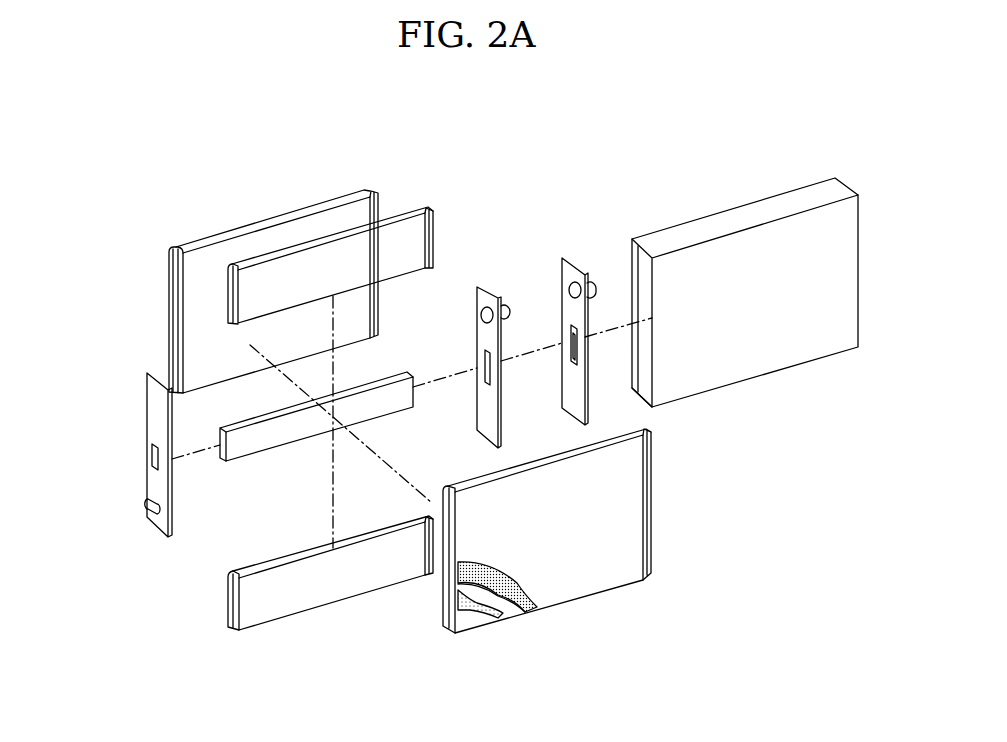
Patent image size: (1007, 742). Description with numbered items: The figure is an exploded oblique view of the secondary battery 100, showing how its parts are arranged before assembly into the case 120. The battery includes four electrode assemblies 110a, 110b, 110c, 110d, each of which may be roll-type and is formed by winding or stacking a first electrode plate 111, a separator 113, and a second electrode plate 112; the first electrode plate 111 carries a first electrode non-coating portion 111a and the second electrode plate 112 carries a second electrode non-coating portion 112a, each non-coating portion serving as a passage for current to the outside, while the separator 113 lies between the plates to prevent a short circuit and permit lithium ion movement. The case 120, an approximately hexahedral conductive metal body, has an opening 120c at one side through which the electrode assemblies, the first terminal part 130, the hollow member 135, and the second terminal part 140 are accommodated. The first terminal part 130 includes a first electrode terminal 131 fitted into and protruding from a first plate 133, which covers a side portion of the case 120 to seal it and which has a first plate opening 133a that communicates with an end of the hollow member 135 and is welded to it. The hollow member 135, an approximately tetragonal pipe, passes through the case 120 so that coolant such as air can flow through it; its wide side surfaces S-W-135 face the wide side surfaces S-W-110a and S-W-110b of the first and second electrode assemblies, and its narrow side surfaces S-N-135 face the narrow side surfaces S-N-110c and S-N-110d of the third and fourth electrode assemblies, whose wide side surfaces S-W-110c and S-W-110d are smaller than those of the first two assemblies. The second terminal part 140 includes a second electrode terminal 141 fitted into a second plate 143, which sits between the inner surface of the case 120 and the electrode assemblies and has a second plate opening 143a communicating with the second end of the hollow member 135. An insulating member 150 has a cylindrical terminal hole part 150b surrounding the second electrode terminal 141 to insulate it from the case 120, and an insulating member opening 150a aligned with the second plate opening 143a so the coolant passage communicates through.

The secondary battery 100 is at (105, 128).
The first electrode assembly 110a is at (608, 577).
The second electrode assembly 110b is at (350, 196).
The third electrode assembly 110c is at (383, 268).
The fourth electrode assembly 110d is at (300, 610).
The first electrode plate 111 is at (502, 614).
The first electrode non-coating portion 111a is at (228, 287).
The second electrode plate 112 is at (535, 612).
The second electrode non-coating portion 112a is at (376, 205).
The separator 113 is at (520, 612).
The case 120 is at (729, 297).
The opening 120c is at (632, 273).
The first terminal part 130 is at (112, 459).
The first electrode terminal 131 is at (133, 487).
The first plate 133 is at (148, 420).
The first plate opening 133a is at (155, 457).
The hollow member 135 is at (383, 405).
The second terminal part 140 is at (474, 350).
The second electrode terminal 141 is at (507, 306).
The second plate 143 is at (477, 405).
The second plate opening 143a is at (485, 358).
The insulating member 150 is at (552, 319).
The insulating member opening 150a is at (566, 330).
The terminal hole part 150b is at (572, 292).
The wide side surface of the first electrode assembly S-W-110a is at (622, 480).
The wide side surface of the second electrode assembly S-W-110b is at (235, 222).
The wide side surface of the third electrode assembly S-W-110c is at (303, 268).
The wide side surface of the fourth electrode assembly S-W-110d is at (348, 585).
The narrow side surface of the third electrode assembly S-N-110c is at (428, 215).
The narrow side surface of the fourth electrode assembly S-N-110d is at (263, 628).
The wide side surfaces of the hollow member S-W-135 is at (360, 402).
The narrow side surfaces of the hollow member S-N-135 is at (295, 447).